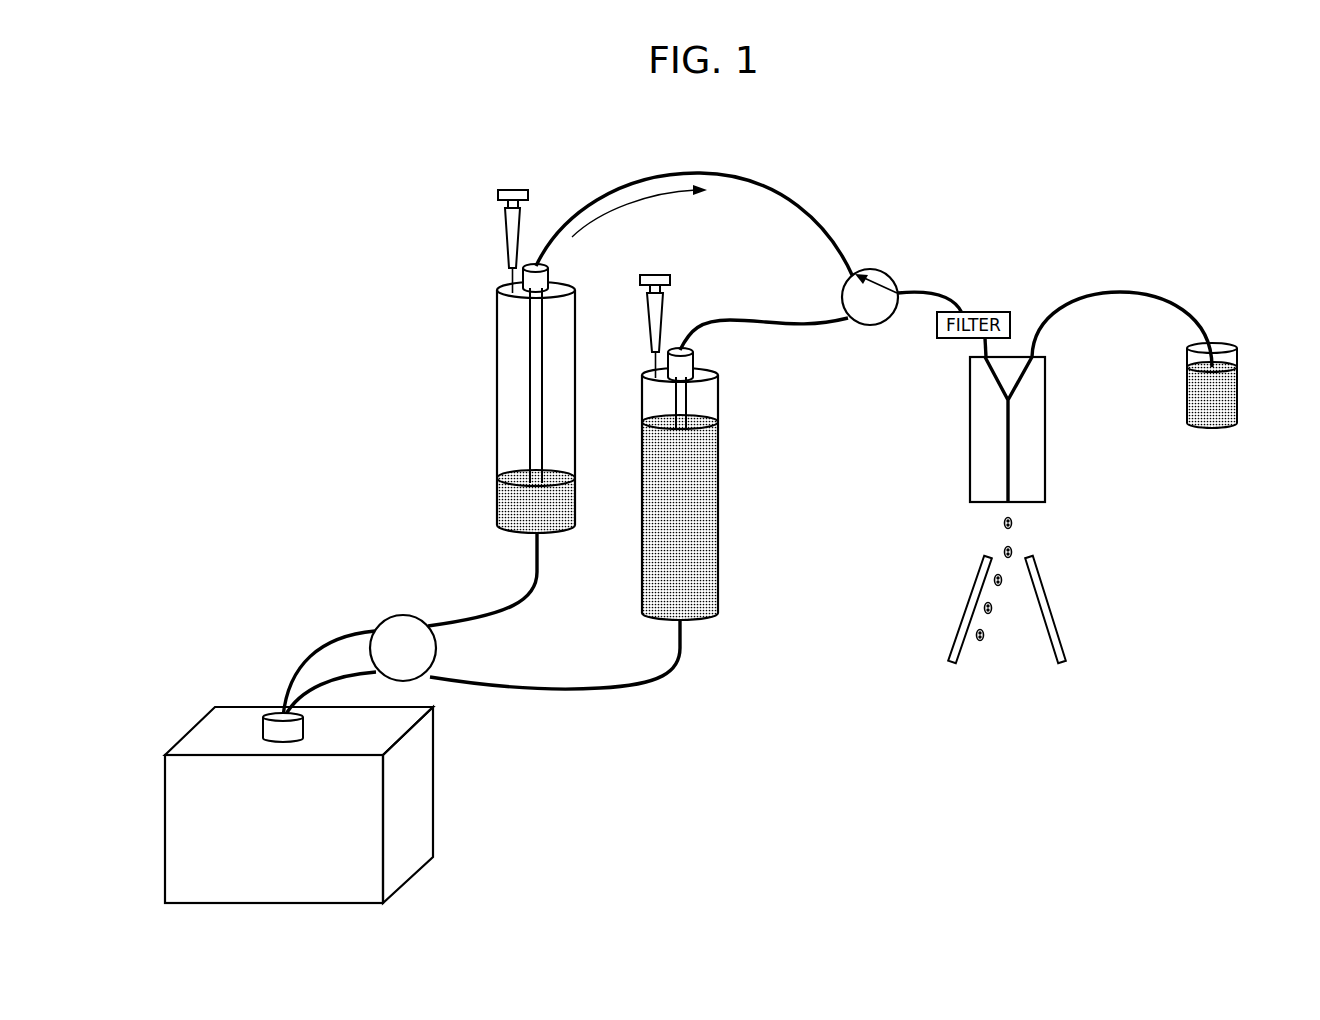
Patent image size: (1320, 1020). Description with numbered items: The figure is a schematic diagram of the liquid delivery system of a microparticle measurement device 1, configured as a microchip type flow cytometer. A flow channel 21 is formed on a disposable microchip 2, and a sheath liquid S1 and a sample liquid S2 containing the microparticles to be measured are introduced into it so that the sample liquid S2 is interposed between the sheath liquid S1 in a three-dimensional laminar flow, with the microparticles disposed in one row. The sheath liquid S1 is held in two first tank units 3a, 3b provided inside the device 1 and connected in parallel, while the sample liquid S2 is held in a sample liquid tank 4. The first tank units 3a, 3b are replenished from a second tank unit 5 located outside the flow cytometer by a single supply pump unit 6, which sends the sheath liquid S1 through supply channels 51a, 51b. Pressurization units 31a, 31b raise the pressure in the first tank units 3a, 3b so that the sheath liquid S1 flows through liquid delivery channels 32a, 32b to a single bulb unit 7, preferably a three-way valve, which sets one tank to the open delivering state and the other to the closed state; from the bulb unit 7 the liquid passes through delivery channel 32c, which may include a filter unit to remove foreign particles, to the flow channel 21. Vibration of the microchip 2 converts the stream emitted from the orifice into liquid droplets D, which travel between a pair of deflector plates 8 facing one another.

The microparticle measurement device 1 is at (252, 228).
The microchip 2 is at (969, 428).
The flow channel 21 is at (1010, 452).
The first tank unit 3a is at (496, 368).
The first tank unit 3b is at (720, 508).
The pressurization unit 31a is at (503, 237).
The pressurization unit 31b is at (663, 270).
The sheath liquid delivery channel 32a is at (710, 172).
The sheath liquid delivery channel 32b is at (767, 332).
The sheath liquid delivery channel 32c is at (948, 300).
The sample liquid tank 4 is at (1220, 342).
The second tank unit 5 is at (418, 813).
The supply channel 51a is at (489, 611).
The supply channel 51b is at (634, 690).
The supply pump unit 6 is at (438, 645).
The bulb unit 7 is at (872, 268).
The deflector plates 8 is at (1064, 617).
The sheath liquid S1 is at (508, 510).
The sample liquid S2 is at (1205, 418).
The liquid droplets D is at (986, 641).